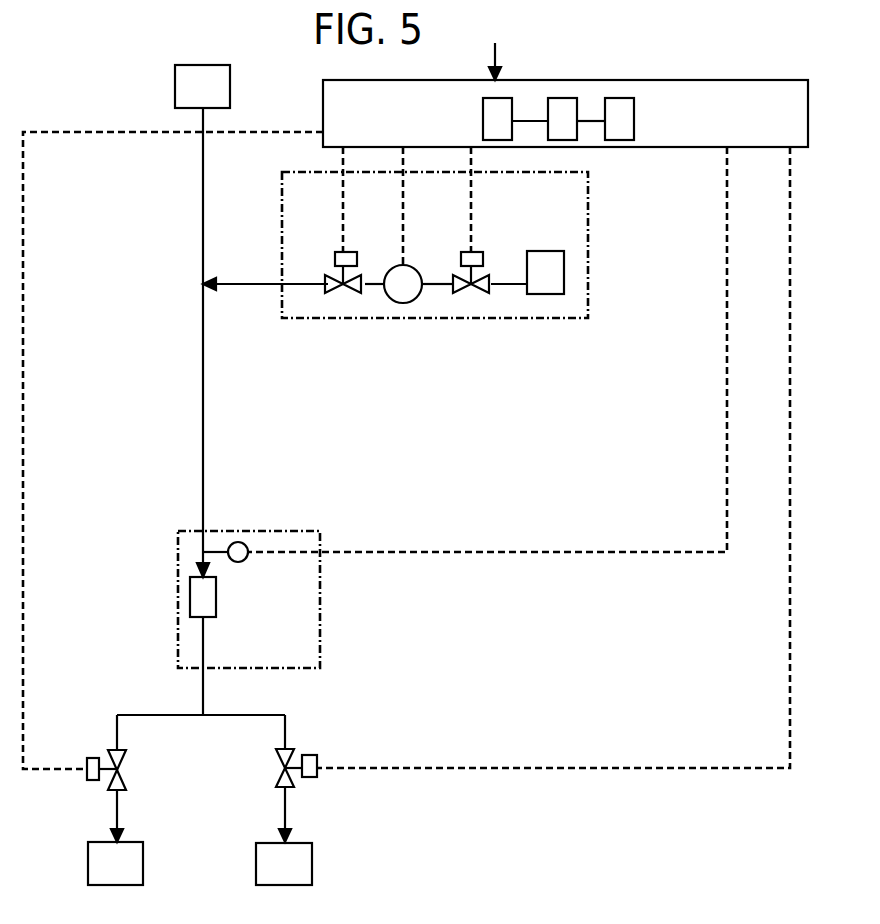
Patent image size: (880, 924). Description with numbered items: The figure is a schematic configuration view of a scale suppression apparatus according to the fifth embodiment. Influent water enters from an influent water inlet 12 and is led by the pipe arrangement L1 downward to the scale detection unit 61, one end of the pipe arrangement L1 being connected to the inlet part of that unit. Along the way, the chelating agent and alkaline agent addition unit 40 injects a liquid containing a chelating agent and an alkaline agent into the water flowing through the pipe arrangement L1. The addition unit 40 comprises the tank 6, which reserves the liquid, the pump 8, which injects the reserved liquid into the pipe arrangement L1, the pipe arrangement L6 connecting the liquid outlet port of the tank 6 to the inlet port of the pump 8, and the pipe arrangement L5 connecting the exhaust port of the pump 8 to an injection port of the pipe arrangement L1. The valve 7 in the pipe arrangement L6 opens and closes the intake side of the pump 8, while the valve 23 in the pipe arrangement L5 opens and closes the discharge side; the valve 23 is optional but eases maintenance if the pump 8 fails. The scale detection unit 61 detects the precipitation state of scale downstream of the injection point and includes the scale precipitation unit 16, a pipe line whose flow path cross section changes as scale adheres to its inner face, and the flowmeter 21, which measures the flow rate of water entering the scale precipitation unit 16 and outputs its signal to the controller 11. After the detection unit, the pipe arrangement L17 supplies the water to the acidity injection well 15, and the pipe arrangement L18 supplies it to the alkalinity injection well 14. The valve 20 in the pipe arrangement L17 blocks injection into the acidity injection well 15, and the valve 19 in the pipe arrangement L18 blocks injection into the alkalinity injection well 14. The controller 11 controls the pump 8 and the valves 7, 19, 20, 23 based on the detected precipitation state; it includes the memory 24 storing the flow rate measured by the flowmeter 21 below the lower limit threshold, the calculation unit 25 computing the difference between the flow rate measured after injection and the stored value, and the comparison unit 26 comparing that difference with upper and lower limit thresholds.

The tank 6 is at (544, 250).
The valve 7 is at (482, 252).
The pump 8 is at (416, 268).
The controller 11 is at (413, 80).
The influent water inlet 12 is at (230, 87).
The alkalinity injection well 14 is at (312, 870).
The acidity injection well 15 is at (143, 870).
The scale precipitation unit 16 is at (216, 597).
The valve 19 is at (317, 762).
The valve 20 is at (86, 757).
The flowmeter 21 is at (245, 560).
The valve 23 is at (353, 252).
The memory 24 is at (507, 98).
The calculation unit 25 is at (572, 98).
The comparison unit 26 is at (618, 98).
The chelating agent and alkaline agent addition unit 40 is at (588, 235).
The scale detection unit 61 is at (178, 572).
The pipe arrangement L1 is at (203, 157).
The pipe arrangement L5 is at (311, 281).
The pipe arrangement L6 is at (505, 282).
The pipe arrangement L17 is at (115, 740).
The pipe arrangement L18 is at (287, 742).